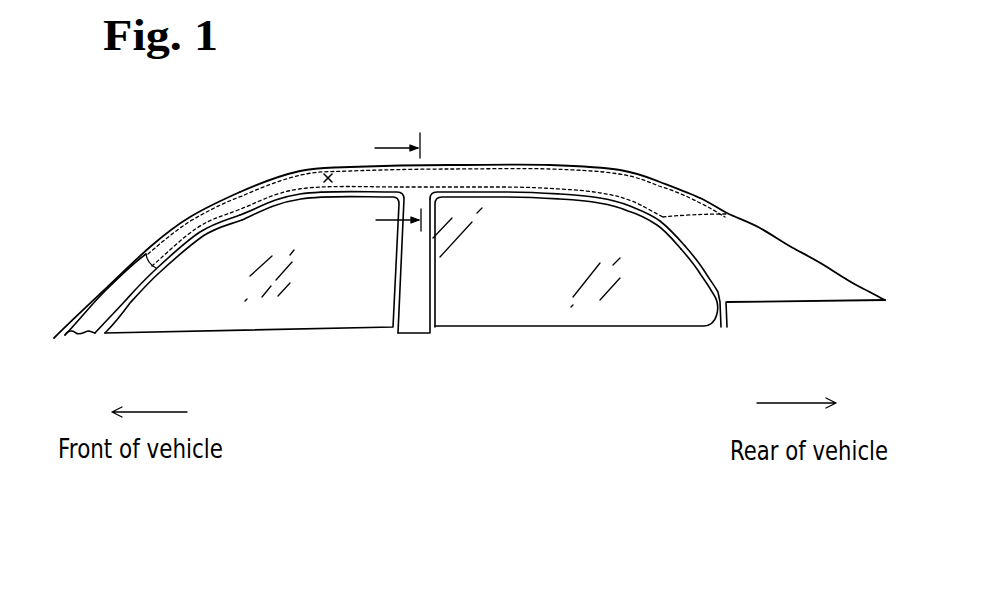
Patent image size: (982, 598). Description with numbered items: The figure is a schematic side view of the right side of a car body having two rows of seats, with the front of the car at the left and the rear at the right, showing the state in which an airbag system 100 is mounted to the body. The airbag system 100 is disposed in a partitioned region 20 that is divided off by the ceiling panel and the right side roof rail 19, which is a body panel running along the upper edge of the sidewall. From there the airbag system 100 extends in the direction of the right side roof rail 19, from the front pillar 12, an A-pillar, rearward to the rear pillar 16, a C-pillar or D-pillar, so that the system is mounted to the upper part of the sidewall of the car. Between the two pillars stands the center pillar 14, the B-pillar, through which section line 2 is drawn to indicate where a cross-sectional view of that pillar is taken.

The front pillar 12 is at (153, 246).
The center pillar 14 is at (434, 318).
The rear pillar 16 is at (764, 222).
The right side roof rail 19 is at (448, 166).
The partitioned region 20 is at (326, 170).
The airbag system 100 is at (557, 166).
The section line 2 is at (395, 187).